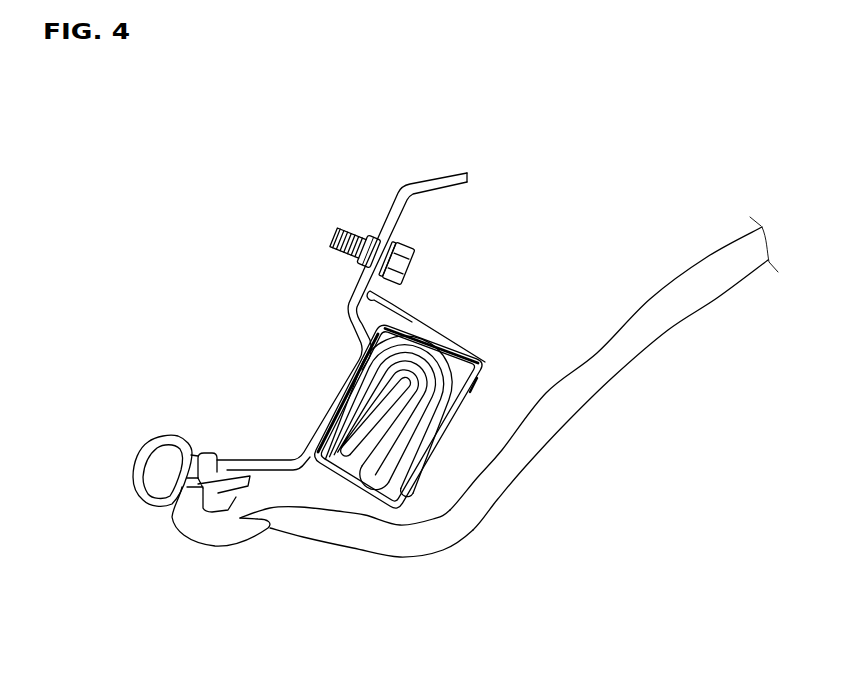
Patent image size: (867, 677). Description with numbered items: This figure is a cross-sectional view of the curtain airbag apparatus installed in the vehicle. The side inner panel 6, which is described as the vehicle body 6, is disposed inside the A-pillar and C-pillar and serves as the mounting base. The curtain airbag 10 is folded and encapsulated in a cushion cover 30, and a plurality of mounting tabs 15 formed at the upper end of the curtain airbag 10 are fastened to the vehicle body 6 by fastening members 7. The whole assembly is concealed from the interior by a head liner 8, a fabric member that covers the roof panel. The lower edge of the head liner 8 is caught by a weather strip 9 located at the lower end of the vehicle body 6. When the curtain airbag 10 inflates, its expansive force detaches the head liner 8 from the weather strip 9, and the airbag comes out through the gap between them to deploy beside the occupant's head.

The side inner panel 6 is at (438, 180).
The fastening members 7 is at (410, 262).
The mounting tabs 15 is at (373, 291).
The curtain airbag 10 is at (353, 398).
The head liner 8 is at (520, 443).
The cushion cover 30 is at (430, 477).
The weather strip 9 is at (185, 527).